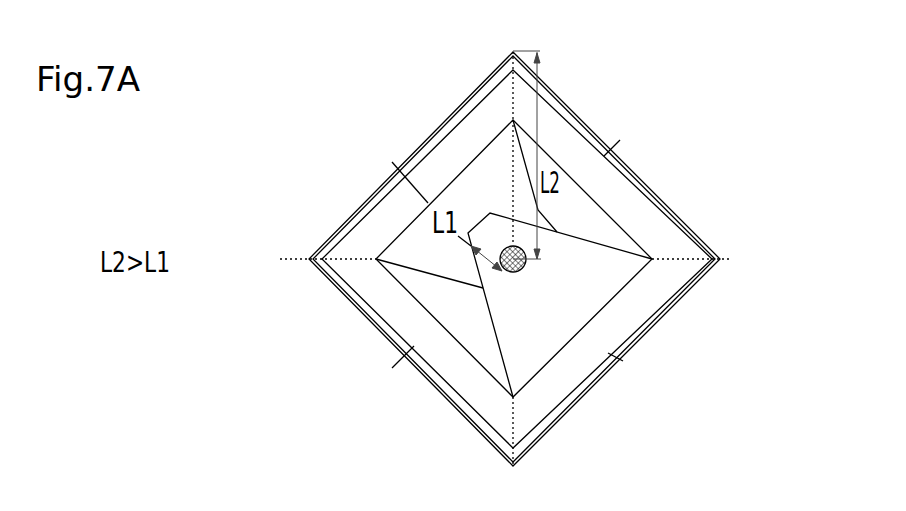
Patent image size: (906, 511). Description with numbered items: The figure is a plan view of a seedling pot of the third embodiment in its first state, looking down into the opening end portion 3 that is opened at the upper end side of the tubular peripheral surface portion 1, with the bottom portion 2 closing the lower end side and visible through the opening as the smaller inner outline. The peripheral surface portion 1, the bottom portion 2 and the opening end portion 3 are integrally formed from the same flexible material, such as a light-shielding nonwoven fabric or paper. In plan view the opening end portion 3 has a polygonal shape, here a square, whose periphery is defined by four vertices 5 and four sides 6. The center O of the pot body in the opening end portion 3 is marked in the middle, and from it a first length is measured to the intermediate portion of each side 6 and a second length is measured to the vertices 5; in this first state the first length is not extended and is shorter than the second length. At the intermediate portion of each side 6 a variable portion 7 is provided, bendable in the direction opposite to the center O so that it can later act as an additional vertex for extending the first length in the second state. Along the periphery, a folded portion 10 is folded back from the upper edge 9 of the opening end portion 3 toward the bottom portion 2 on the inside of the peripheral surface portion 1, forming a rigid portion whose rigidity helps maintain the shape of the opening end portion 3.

The peripheral surface portion 1 is at (410, 327).
The bottom portion 2 is at (575, 283).
The opening end portion 3 is at (350, 212).
The vertices 5 is at (513, 52).
The sides 6 is at (510, 270).
The variable portion 7 is at (392, 162).
The upper edge 9 is at (514, 259).
The folded portion 10 is at (657, 200).
The center O is at (511, 222).